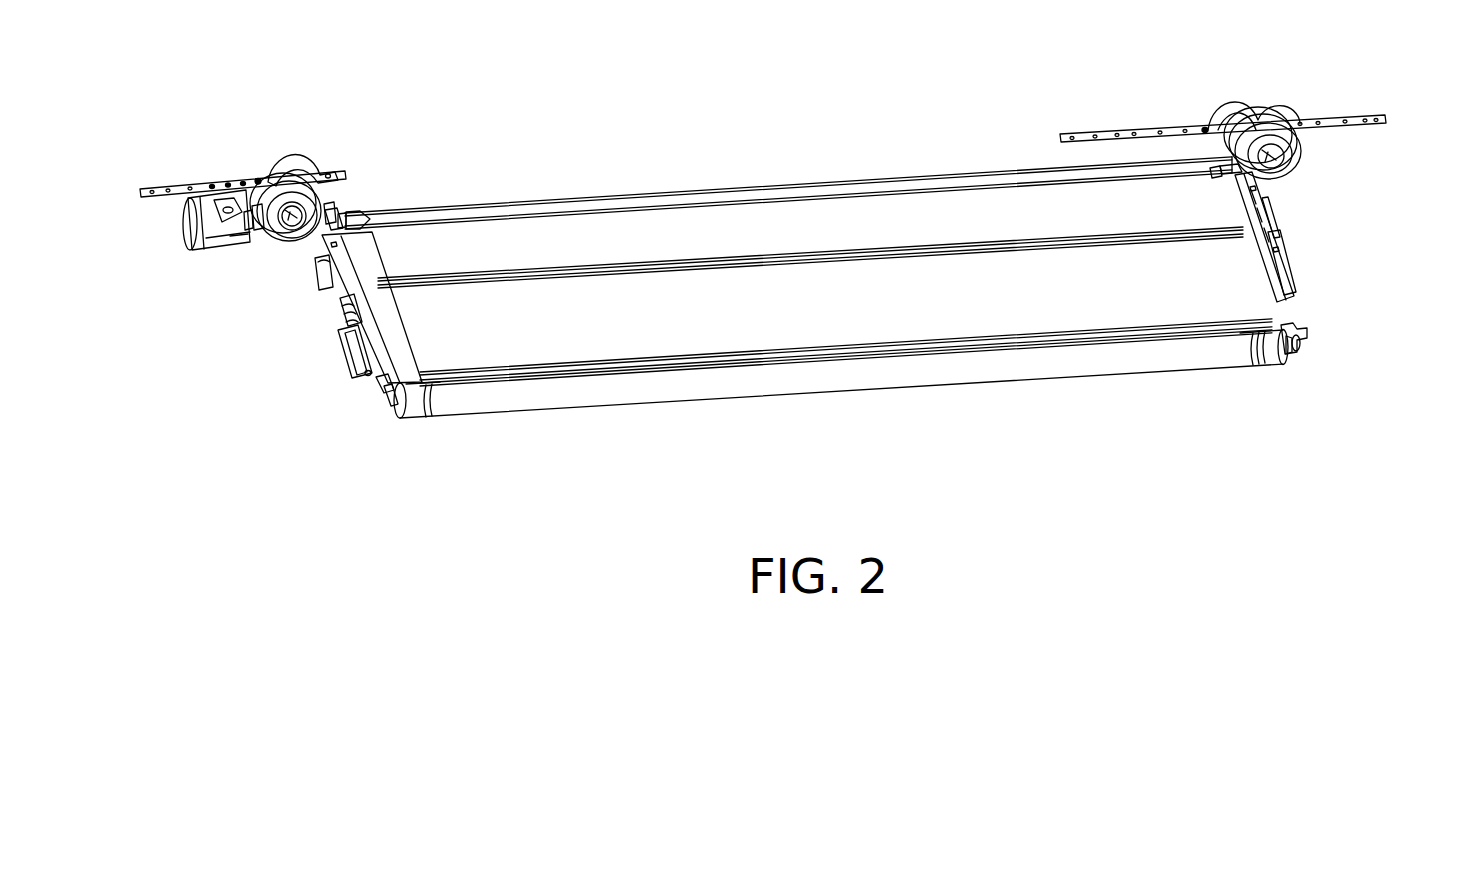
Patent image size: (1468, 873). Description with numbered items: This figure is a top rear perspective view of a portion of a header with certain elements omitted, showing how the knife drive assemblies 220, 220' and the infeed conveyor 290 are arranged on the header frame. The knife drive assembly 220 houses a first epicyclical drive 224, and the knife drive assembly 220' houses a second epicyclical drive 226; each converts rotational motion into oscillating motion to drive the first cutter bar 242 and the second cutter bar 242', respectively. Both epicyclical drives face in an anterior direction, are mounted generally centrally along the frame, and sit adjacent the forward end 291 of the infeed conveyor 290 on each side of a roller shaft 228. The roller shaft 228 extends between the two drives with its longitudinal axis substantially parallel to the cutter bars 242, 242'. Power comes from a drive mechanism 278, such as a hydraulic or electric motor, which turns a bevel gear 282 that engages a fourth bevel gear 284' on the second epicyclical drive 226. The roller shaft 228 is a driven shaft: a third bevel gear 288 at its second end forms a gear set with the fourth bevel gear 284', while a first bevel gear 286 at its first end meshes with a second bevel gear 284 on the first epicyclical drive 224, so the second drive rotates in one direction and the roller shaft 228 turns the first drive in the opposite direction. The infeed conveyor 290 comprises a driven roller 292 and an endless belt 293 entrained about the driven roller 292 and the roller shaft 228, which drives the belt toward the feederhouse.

The knife drive assembly 220 is at (1262, 150).
The knife drive assembly 220' is at (215, 282).
The first epicyclical drive 224 is at (1308, 169).
The second epicyclical drive 226 is at (305, 277).
The roller shaft 228 is at (336, 216).
The first cutter bar 242 is at (1223, 91).
The second cutter bar 242' is at (243, 157).
The drive mechanism 278 is at (190, 236).
The gear 282 is at (274, 236).
The second bevel gear 284 is at (1324, 199).
The fourth bevel gear 284' is at (265, 276).
The first bevel gear 286 is at (1262, 170).
The third bevel gear 288 is at (340, 206).
The infeed conveyor 290 is at (985, 383).
The forward end 291 is at (864, 186).
The driven roller 292 is at (392, 400).
The endless belt 293 is at (1086, 376).